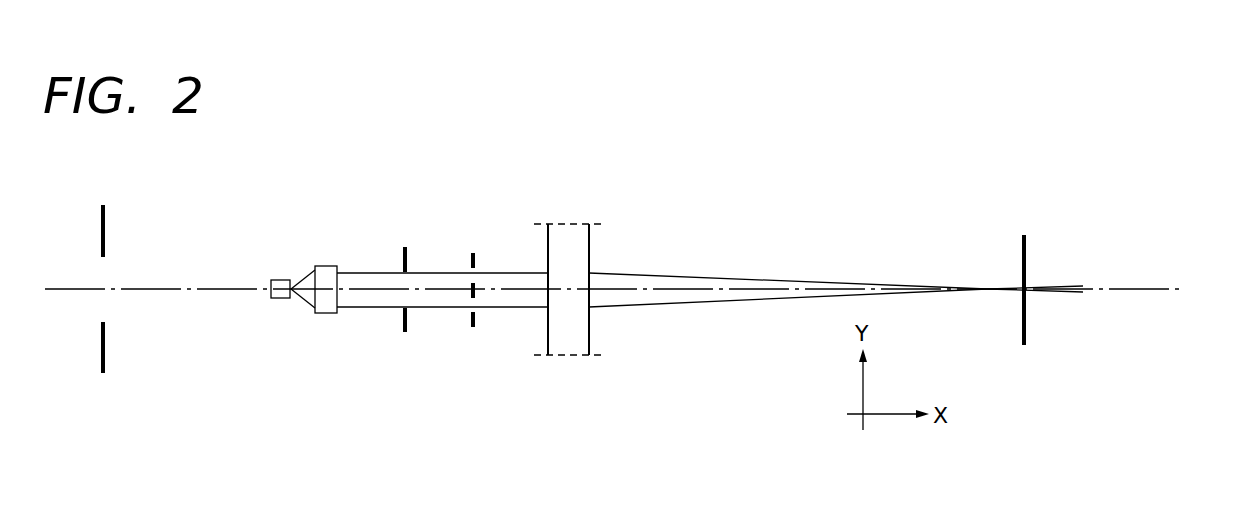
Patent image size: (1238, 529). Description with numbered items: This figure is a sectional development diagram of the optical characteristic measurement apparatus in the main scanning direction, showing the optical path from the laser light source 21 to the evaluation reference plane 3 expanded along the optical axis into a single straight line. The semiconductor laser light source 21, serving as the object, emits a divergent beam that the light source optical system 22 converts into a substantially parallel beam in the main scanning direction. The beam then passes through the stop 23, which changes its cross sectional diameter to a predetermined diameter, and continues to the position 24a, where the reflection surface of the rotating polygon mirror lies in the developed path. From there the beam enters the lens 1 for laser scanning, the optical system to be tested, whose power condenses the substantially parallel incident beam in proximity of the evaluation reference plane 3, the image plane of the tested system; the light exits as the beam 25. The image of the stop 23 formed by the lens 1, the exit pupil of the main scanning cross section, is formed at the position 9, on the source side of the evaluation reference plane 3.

The exit pupil 9 is at (105, 222).
The semiconductor laser light source 21 is at (283, 279).
The light source optical system 22 is at (328, 265).
The stop 23 is at (405, 246).
The position of the reflection surface of the polygon mirror 24a is at (477, 252).
The lens for laser scanning 1 is at (580, 248).
The beam 25 is at (743, 288).
The evaluation reference plane 3 is at (1026, 258).